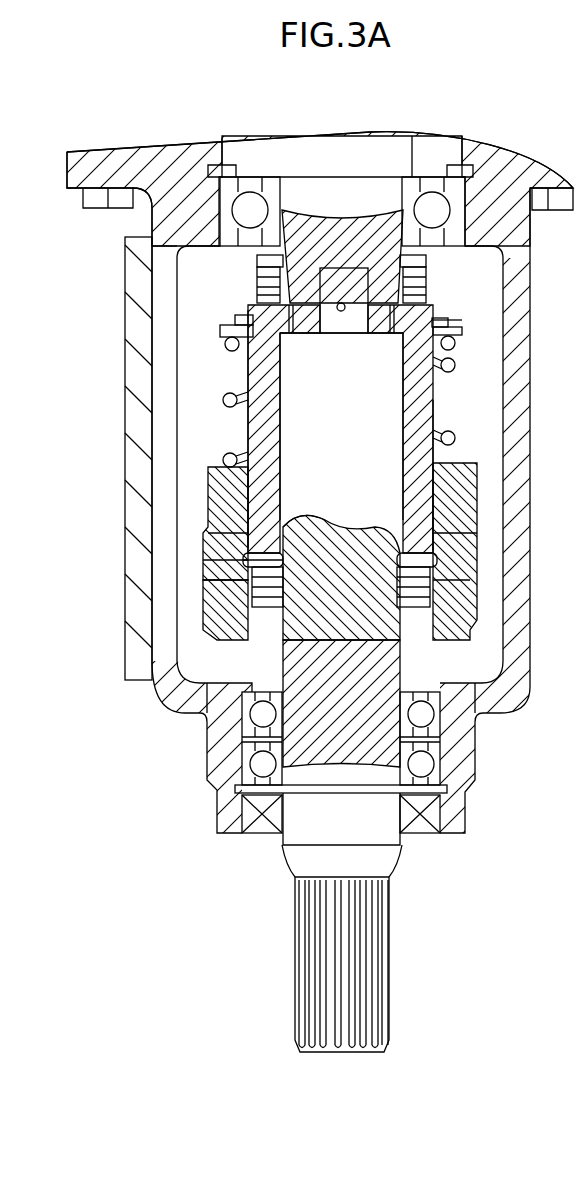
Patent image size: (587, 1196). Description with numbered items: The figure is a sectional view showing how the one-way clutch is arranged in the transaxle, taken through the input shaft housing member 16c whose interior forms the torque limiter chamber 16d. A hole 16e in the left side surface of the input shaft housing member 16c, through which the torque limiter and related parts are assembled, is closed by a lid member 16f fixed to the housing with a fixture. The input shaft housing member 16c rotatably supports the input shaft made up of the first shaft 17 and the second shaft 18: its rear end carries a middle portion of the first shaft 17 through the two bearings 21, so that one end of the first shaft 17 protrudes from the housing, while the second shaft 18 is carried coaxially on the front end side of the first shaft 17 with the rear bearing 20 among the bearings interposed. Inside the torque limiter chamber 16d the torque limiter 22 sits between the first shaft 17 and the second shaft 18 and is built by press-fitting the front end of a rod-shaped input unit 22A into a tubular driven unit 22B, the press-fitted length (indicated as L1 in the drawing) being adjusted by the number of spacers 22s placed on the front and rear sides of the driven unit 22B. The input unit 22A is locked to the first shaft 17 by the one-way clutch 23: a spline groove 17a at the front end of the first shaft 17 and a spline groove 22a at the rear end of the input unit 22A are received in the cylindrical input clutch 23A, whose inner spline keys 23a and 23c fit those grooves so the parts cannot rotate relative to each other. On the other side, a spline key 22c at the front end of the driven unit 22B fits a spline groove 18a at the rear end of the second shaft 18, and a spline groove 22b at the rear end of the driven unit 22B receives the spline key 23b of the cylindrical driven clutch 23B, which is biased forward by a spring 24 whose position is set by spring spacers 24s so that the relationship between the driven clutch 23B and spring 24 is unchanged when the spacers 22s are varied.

The input shaft housing member 16c is at (160, 245).
The torque limiter chamber 16d is at (188, 387).
The hole 16e is at (167, 263).
The lid member 16f is at (131, 405).
The first shaft 17 is at (313, 848).
The spline groove 17a is at (250, 723).
The second shaft 18 is at (263, 252).
The spline groove 18a is at (262, 285).
The bearing 20 is at (227, 192).
The bearing 21 is at (246, 777).
The torque limiter 22 is at (50, 455).
The input unit 22A is at (300, 483).
The driven unit 22B is at (262, 432).
The spline groove 22a is at (400, 607).
The spline groove 22b is at (430, 455).
The spline key 22c is at (247, 315).
The spacer 22s is at (427, 280).
The one-way clutch 23 is at (55, 578).
The input clutch 23A is at (223, 618).
The driven clutch 23B is at (210, 557).
The spline key 23a is at (267, 658).
The spline key 23b is at (247, 512).
The spline key 23c is at (257, 627).
The spring 24 is at (227, 400).
The spring spacer 24s is at (463, 332).
The length dimension L1 is at (392, 550).